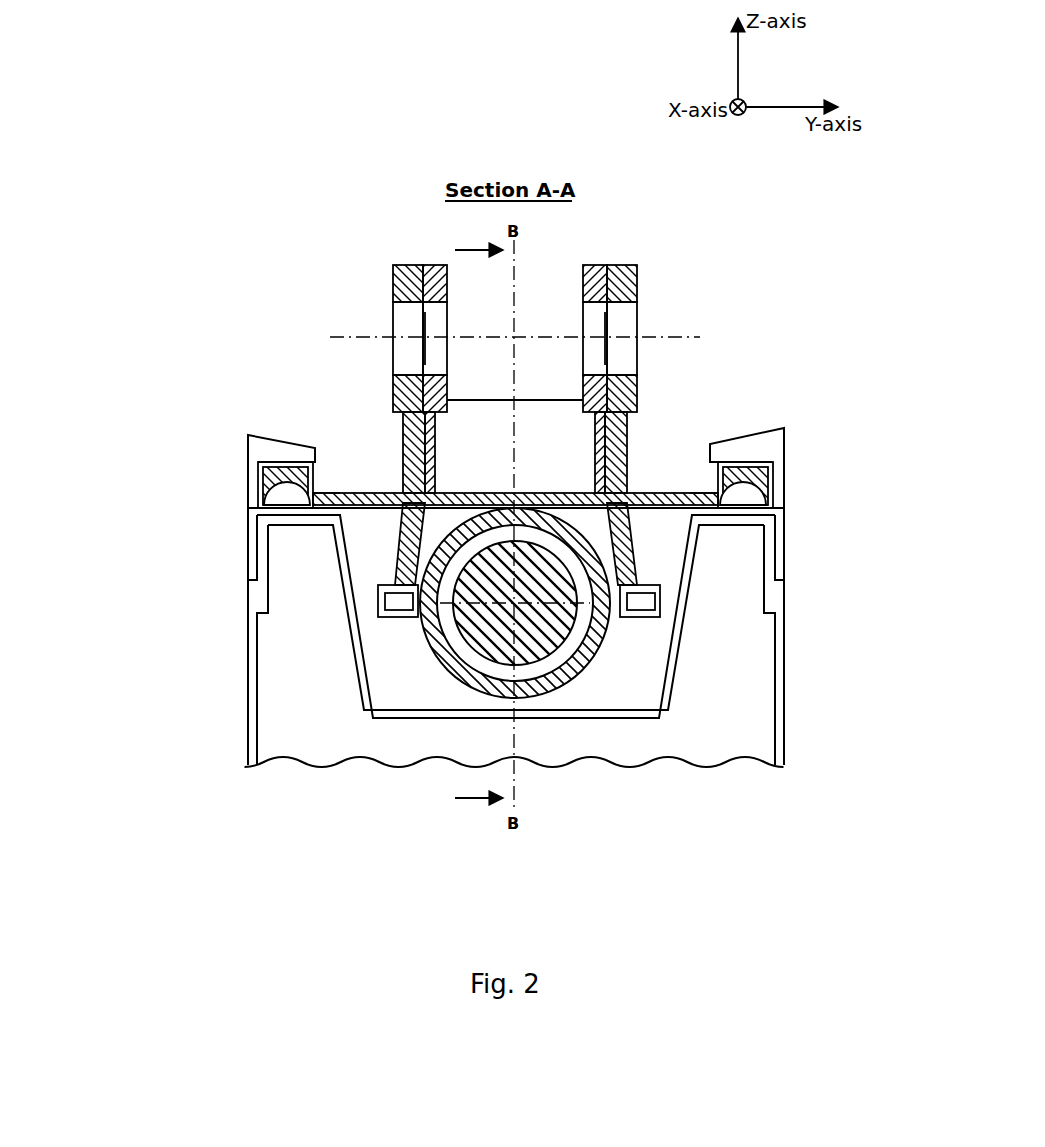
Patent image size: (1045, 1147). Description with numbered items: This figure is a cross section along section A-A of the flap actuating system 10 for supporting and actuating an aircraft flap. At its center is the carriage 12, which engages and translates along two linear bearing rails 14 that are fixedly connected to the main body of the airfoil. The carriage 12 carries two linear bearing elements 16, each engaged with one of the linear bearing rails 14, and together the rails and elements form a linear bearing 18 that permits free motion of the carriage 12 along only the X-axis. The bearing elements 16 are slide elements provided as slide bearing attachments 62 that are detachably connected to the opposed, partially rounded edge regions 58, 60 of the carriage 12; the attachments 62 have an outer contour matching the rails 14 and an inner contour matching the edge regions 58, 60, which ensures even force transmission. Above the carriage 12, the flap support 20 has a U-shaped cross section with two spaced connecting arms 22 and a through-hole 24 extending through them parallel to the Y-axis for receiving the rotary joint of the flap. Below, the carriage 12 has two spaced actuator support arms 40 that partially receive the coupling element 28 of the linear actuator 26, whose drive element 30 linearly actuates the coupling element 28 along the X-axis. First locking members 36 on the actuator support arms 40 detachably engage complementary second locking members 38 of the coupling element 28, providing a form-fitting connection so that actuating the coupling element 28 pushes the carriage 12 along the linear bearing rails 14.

The flap actuating system 10 is at (134, 96).
The carriage 12 is at (684, 282).
The linear bearing rails 14 is at (790, 452).
The linear bearing elements 16 is at (314, 476).
The linear bearing 18 is at (781, 367).
The flap support 20 is at (649, 265).
The connecting arms 22 is at (632, 280).
The through-hole 24 is at (581, 337).
The linear actuator 26 is at (903, 682).
The coupling element 28 is at (614, 624).
The drive element 30 is at (551, 625).
The first locking members 36 is at (378, 604).
The second locking members 38 is at (390, 607).
The actuator support arms 40 is at (590, 508).
The edge region 58 is at (690, 479).
The edge region 60 is at (333, 483).
The slide bearing attachments 62 is at (282, 478).